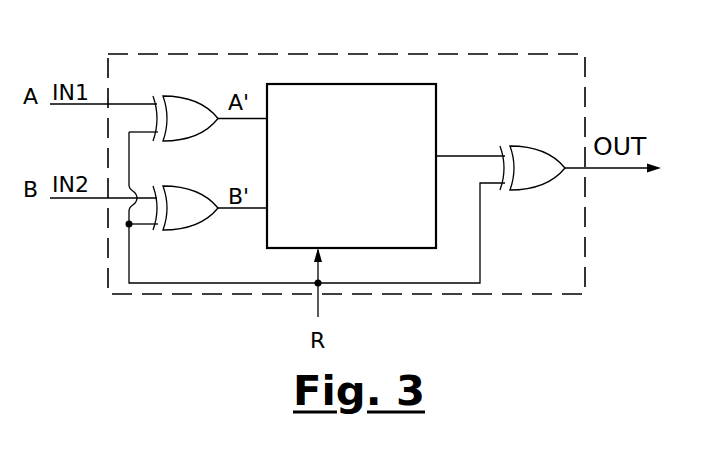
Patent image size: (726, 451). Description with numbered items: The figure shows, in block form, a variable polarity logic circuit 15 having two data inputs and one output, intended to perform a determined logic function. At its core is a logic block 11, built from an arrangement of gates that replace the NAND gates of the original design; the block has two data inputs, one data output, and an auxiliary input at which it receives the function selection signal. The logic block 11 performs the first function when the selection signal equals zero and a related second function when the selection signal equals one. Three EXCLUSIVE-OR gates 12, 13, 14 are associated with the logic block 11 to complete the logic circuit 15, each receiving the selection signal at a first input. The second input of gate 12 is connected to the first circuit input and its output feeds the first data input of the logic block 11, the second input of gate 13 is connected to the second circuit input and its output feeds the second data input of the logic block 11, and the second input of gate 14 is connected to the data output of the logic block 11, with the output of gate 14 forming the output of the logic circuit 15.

The logic block 11 is at (372, 84).
The EXCLUSIVE-OR gate 12 is at (190, 96).
The EXCLUSIVE-OR gate 13 is at (195, 231).
The EXCLUSIVE-OR gate 14 is at (525, 146).
The logic circuit 15 is at (585, 92).